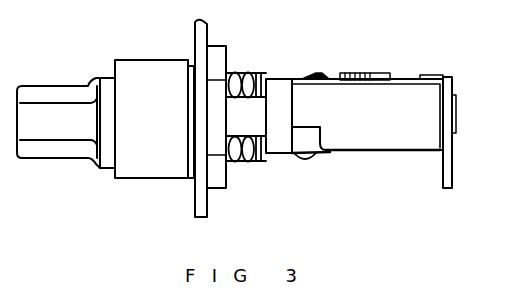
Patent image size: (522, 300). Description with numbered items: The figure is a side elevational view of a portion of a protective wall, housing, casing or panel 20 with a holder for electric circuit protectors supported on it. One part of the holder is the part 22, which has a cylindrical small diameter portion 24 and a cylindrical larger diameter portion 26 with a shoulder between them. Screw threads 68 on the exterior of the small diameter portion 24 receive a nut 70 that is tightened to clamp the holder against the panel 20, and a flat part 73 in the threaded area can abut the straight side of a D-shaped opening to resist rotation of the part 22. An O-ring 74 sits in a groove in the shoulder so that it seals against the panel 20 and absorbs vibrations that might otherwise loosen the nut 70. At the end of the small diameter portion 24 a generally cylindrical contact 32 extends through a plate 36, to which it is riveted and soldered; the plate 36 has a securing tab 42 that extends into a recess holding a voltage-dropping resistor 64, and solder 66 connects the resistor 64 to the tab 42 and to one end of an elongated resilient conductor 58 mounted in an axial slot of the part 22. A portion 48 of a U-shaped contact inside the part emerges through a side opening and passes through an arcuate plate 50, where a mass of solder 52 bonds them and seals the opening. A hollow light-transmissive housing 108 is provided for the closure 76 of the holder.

The light-transmissive housing 108 is at (57, 100).
The closure 76 is at (67, 204).
The larger diameter portion 26 is at (160, 159).
The O-ring 74 is at (187, 178).
The portion of a protective wall, housing, casing or panel 20 is at (209, 27).
The nut 70 is at (217, 183).
The part of the holder 22 is at (302, 229).
The flat part 73 is at (233, 117).
The screw threads 68 is at (237, 162).
The elongated conductor 58 is at (277, 78).
The small diameter portion 24 is at (415, 124).
The portion of the contact 48 is at (310, 161).
The plate 50 is at (381, 152).
The mass of solder 52 is at (322, 161).
The solder 66 is at (310, 72).
The resistor 64 is at (366, 72).
The securing tab 42 is at (425, 76).
The plate 36 is at (451, 168).
The contact 32 is at (456, 100).